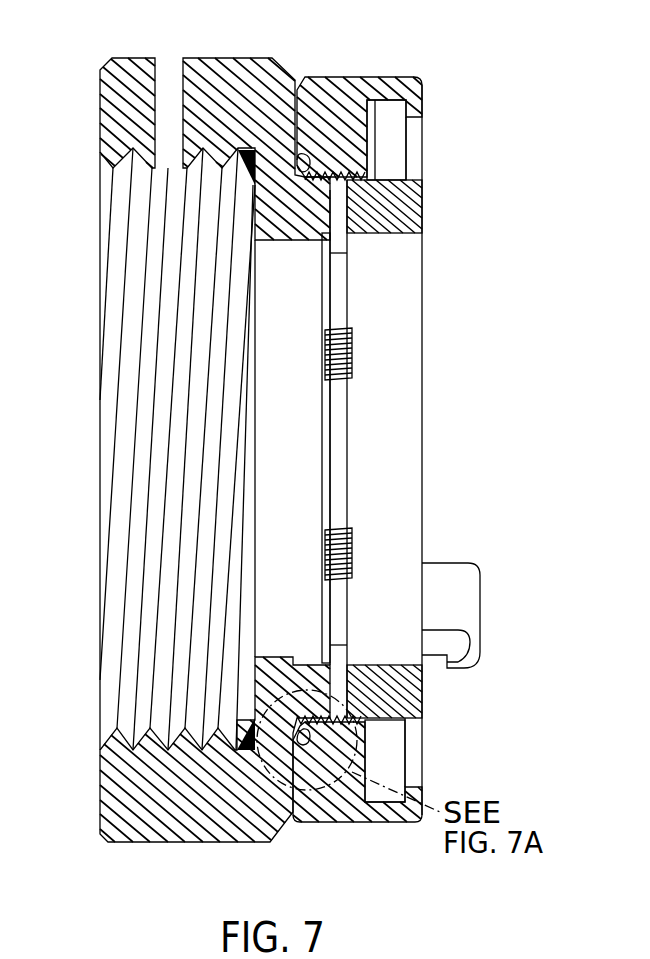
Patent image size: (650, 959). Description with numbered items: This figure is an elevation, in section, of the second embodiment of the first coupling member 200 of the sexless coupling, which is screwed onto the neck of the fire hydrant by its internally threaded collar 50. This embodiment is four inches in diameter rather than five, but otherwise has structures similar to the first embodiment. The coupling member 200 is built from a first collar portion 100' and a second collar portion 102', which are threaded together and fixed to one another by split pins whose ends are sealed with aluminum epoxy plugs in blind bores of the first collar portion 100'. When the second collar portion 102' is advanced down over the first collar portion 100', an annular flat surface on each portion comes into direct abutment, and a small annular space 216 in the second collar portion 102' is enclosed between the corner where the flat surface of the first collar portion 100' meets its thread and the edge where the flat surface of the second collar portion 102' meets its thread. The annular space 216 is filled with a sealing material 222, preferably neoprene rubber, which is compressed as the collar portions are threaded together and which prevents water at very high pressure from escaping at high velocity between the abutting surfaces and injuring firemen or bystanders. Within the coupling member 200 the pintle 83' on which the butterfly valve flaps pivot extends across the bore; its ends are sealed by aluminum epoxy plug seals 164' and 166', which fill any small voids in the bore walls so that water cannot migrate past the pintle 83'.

The first collar portion 100' is at (215, 375).
The second collar portion 102' is at (357, 424).
The first coupling member 200 is at (440, 102).
The annular space 216 is at (305, 158).
The sealing material 222 is at (300, 172).
The plug seal 164' is at (428, 198).
The plug seal 166' is at (404, 691).
The pintle 83' is at (364, 449).
The internally threaded collar 50 is at (112, 586).